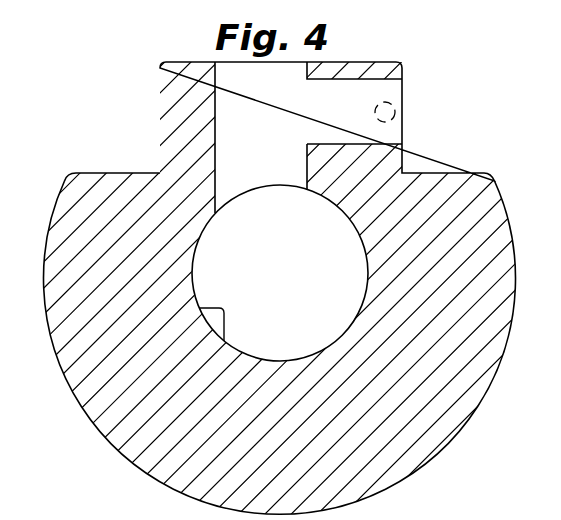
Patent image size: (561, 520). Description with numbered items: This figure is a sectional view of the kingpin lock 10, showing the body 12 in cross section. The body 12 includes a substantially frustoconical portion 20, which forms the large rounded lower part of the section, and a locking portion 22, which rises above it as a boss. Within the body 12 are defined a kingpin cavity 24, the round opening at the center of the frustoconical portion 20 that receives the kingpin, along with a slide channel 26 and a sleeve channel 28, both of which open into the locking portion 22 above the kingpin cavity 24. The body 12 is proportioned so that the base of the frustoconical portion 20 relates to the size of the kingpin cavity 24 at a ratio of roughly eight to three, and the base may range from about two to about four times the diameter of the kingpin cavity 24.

The kingpin lock 10 is at (459, 93).
The body 12 is at (487, 172).
The frustoconical portion 20 is at (454, 438).
The locking portion 22 is at (160, 88).
The kingpin cavity 24 is at (224, 345).
The slide channel 26 is at (266, 111).
The sleeve channel 28 is at (349, 123).